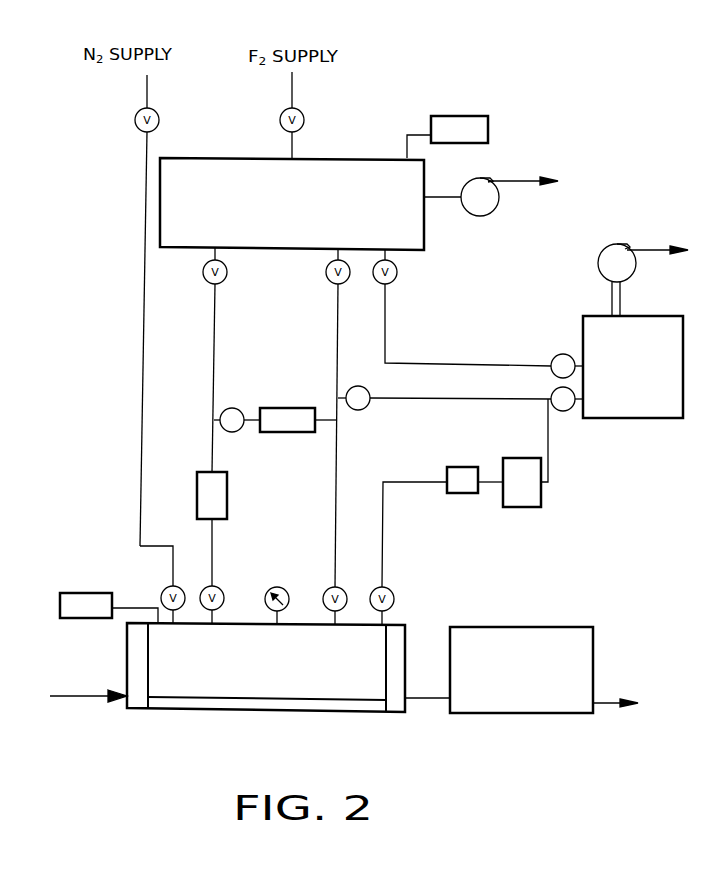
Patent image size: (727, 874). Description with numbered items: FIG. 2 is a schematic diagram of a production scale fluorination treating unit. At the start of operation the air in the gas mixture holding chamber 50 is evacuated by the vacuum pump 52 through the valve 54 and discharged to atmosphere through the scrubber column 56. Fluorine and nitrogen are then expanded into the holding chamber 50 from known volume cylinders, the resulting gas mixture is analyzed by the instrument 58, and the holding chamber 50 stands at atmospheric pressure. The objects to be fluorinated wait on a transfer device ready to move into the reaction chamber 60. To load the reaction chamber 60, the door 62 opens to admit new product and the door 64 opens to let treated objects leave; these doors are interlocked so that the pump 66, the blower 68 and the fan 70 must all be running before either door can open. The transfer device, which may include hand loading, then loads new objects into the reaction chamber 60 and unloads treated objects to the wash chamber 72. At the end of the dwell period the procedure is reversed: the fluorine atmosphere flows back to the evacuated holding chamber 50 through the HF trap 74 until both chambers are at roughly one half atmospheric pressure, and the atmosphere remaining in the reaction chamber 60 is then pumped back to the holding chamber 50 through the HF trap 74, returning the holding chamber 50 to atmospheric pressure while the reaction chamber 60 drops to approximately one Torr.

The gas mixture holding chamber 50 is at (204, 164).
The vacuum pump 52 is at (293, 432).
The valve 54 is at (359, 386).
The scrubber column 56 is at (697, 383).
The instrument 58 is at (462, 120).
The reaction chamber 60 is at (257, 708).
The door 62 is at (135, 657).
The door 64 is at (401, 670).
The pump 66 is at (521, 500).
The blower 68 is at (614, 255).
The fan 70 is at (484, 186).
The wash chamber 72 is at (590, 646).
The HF trap 74 is at (218, 501).